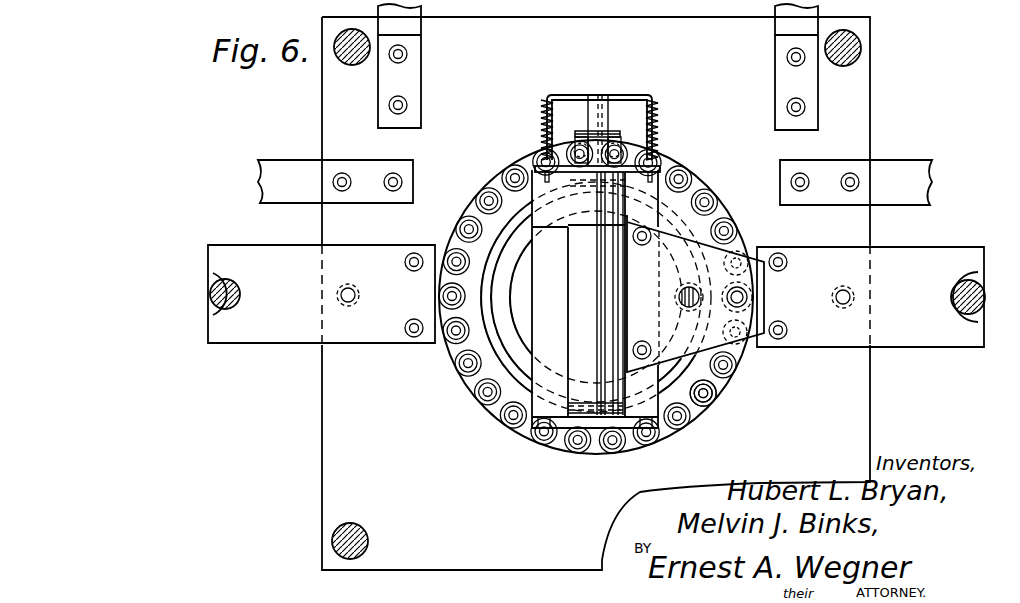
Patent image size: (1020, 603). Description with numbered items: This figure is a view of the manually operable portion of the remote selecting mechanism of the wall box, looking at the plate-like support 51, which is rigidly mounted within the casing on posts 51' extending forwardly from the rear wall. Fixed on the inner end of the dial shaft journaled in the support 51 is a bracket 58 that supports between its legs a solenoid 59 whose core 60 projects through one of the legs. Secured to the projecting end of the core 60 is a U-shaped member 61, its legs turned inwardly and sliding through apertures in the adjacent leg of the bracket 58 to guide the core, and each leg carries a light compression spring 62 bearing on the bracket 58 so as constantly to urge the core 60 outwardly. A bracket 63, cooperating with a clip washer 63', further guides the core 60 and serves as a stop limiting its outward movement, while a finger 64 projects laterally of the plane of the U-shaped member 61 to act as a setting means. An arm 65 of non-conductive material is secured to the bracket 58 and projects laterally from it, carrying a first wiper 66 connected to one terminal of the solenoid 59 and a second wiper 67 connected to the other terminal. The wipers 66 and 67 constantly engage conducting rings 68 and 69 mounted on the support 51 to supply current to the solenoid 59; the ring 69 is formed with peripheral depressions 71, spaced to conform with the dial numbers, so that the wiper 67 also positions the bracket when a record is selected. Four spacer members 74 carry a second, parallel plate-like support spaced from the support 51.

The plate-like support 51 is at (596, 293).
The posts 51' is at (321, 276).
The bracket 58 is at (658, 183).
The solenoid 59 is at (578, 316).
The core 60 is at (609, 108).
The U-shaped member 61 is at (571, 95).
The compression spring 62 is at (545, 140).
The bracket 63 is at (606, 136).
The clip washer 63' is at (572, 136).
The finger 64 is at (599, 94).
The arm 65 is at (736, 258).
The first wiper 66 is at (686, 305).
The second wiper 67 is at (764, 282).
The conducting ring 68 is at (690, 368).
The conducting ring 69 is at (700, 408).
The depressions 71 is at (458, 370).
The spacer members 74 is at (345, 57).